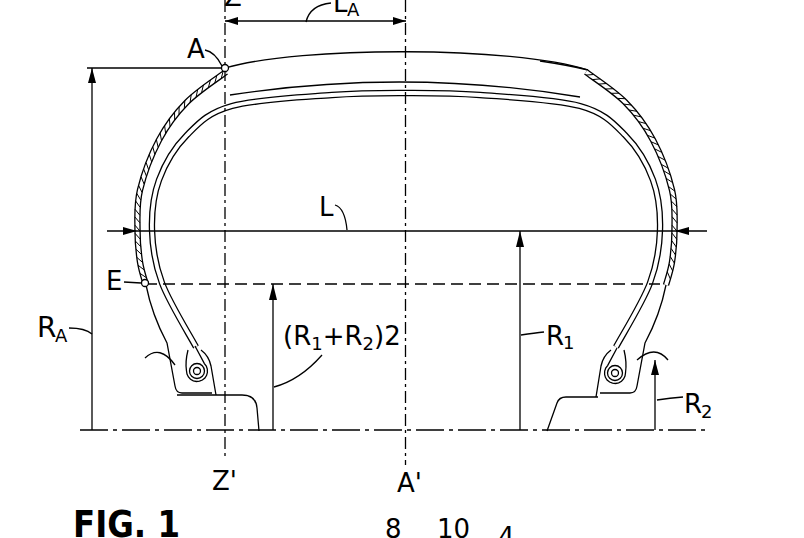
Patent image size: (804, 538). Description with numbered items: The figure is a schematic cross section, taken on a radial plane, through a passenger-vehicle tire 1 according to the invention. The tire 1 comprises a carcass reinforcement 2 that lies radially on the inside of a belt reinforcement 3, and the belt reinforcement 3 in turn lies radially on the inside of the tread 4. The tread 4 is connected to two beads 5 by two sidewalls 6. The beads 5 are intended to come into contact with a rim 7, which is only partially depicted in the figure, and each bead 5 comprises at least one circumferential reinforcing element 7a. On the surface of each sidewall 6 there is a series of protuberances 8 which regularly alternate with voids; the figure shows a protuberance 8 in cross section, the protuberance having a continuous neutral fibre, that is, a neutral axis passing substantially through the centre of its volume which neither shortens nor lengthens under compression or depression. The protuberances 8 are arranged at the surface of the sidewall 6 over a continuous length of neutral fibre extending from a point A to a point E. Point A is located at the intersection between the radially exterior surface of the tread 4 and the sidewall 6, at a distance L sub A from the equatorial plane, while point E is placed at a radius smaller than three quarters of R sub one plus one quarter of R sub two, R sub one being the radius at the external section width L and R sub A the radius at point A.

The passenger-vehicle tire 1 is at (412, 237).
The carcass reinforcement 2 is at (365, 90).
The belt reinforcement 3 is at (477, 88).
The tread 4 is at (570, 65).
The bead 5 is at (607, 383).
The sidewall 6 is at (651, 128).
The rim 7 is at (254, 425).
The circumferential reinforcing element 7a is at (192, 380).
The protuberance 8 is at (164, 125).